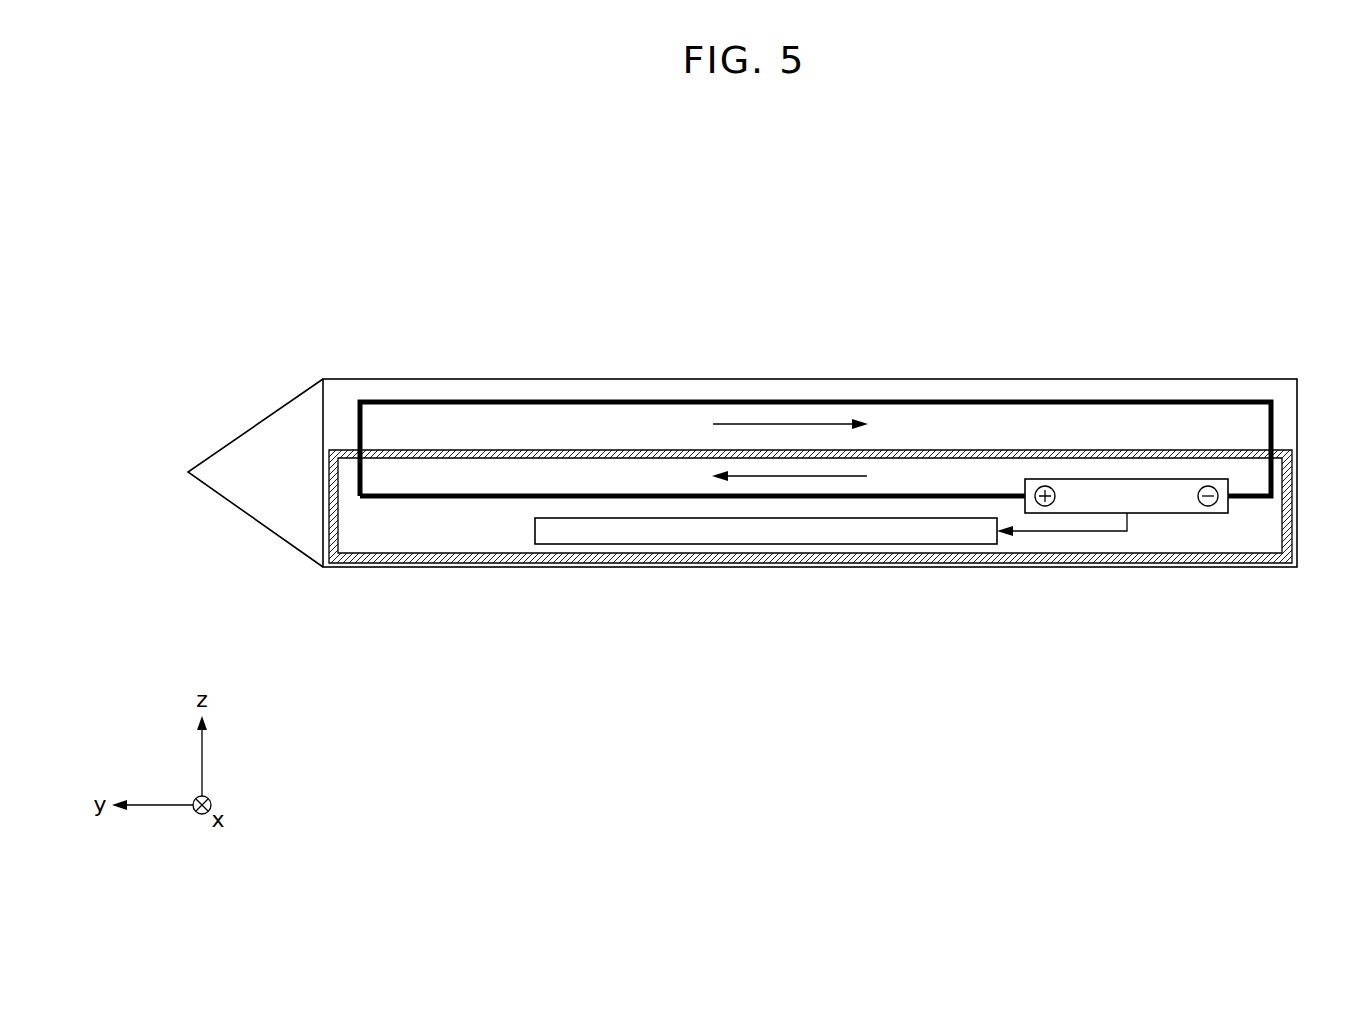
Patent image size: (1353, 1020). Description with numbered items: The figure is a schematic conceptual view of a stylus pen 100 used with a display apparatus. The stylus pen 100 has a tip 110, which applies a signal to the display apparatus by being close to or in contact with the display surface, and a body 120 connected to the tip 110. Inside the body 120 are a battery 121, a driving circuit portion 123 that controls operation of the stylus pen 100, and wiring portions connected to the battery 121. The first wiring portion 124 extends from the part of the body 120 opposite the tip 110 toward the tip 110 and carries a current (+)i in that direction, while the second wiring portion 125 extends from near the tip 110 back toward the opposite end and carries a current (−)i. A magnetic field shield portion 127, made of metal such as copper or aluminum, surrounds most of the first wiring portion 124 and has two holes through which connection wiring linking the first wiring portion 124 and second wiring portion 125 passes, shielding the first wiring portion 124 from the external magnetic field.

The stylus pen 100 is at (1232, 348).
The tip 110 is at (248, 501).
The body 120 is at (495, 379).
The battery 121 is at (1150, 505).
The driving circuit portion 123 is at (782, 533).
The first wiring portion 124 is at (601, 497).
The second wiring portion 125 is at (798, 400).
The magnetic field shield portion 127 is at (457, 460).